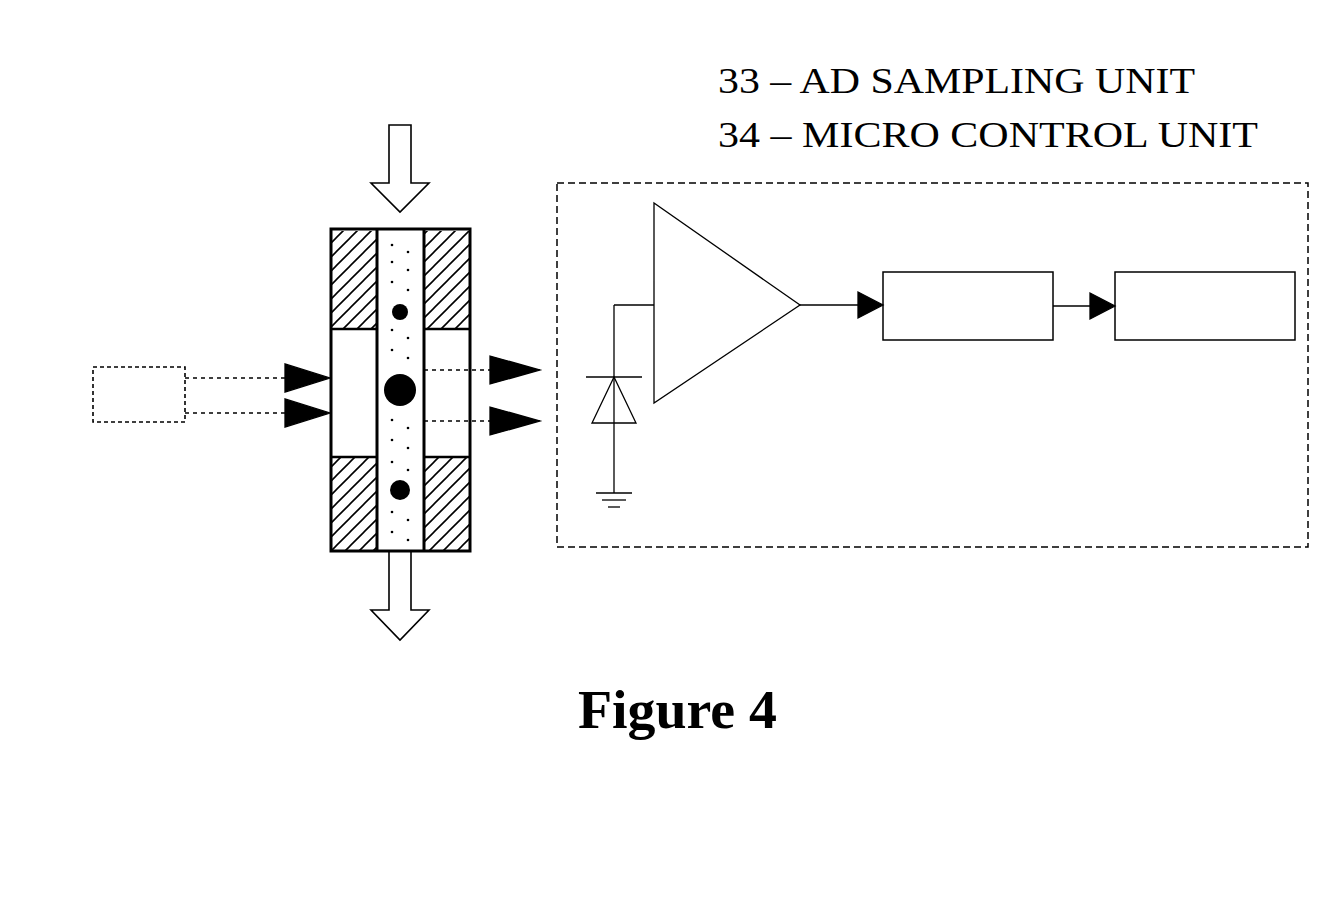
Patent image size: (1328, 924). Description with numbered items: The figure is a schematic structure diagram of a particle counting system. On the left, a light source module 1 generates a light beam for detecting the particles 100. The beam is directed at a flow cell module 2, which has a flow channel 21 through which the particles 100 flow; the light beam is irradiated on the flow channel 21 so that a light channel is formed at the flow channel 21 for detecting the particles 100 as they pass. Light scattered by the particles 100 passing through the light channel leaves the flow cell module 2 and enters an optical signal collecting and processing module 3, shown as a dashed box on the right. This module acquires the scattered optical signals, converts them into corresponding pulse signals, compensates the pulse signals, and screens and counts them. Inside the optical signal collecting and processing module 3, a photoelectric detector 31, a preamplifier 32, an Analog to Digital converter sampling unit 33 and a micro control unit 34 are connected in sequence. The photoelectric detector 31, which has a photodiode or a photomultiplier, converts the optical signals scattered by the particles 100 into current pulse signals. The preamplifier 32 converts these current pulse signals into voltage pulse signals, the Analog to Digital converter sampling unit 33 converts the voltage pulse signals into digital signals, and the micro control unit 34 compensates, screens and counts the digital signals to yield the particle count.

The light source module 1 is at (136, 367).
The flow cell module 2 is at (332, 550).
The flow channel 21 is at (332, 472).
The particles 100 is at (384, 376).
The optical signal collecting and processing module 3 is at (885, 548).
The photoelectric detector 31 is at (635, 427).
The preamplifier 32 is at (740, 258).
The Analog to Digital converter sampling unit 33 is at (970, 272).
The micro control unit 34 is at (1205, 272).